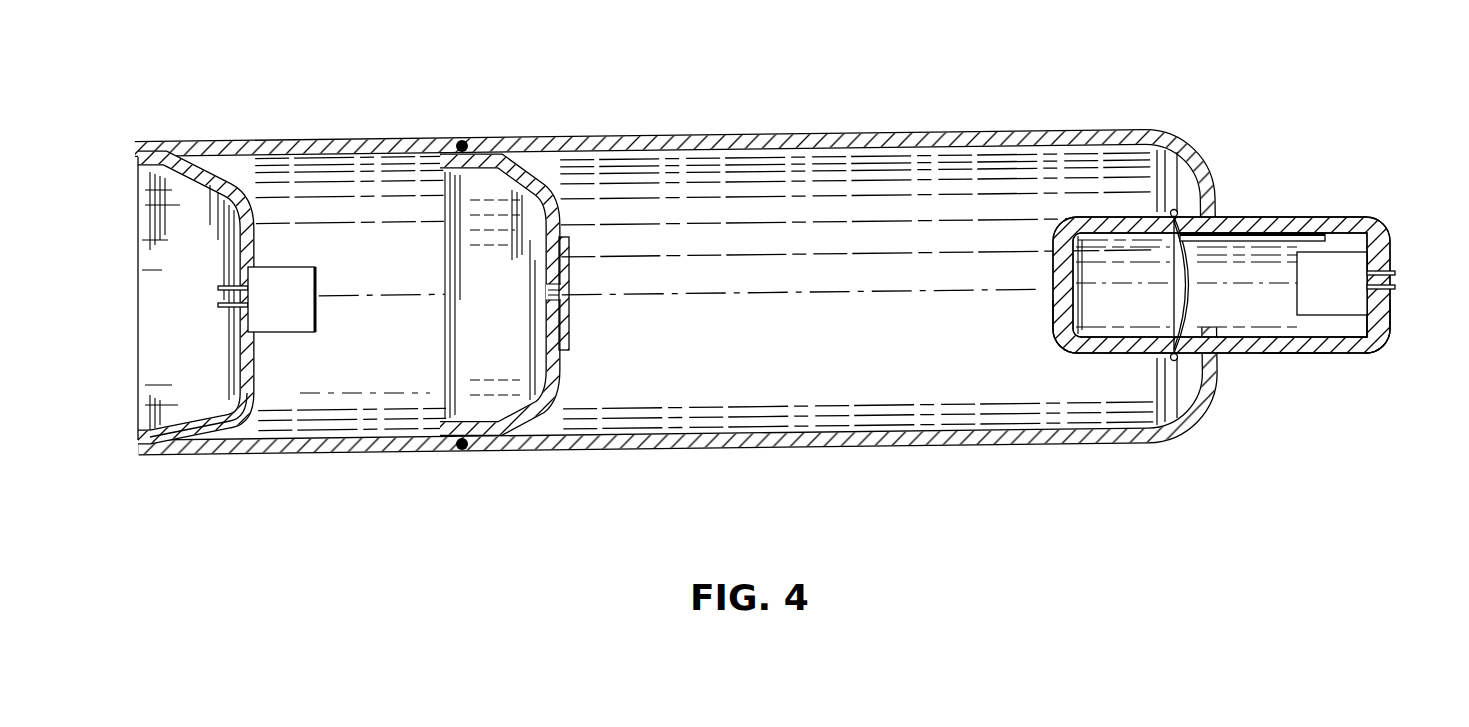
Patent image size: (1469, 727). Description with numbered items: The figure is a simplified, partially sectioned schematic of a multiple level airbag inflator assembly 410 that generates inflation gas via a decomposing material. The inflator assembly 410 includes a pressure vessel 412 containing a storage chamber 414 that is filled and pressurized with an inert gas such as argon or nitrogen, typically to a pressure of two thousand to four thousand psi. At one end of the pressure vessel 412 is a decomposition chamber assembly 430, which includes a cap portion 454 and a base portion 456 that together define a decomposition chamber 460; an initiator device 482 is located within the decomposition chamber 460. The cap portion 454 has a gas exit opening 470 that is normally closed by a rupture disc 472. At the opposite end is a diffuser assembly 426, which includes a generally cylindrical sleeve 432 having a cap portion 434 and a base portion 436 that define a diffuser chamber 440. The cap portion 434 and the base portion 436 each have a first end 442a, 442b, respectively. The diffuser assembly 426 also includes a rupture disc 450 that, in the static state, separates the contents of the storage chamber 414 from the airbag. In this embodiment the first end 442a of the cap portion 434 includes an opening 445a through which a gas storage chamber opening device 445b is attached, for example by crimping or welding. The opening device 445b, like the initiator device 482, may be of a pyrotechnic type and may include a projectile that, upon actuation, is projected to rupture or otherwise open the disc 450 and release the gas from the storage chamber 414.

The multiple level airbag inflator assembly 410 is at (672, 236).
The pressure vessel 412 is at (917, 128).
The storage chamber 414 is at (625, 167).
The diffuser assembly 426 is at (1318, 207).
The decomposition chamber assembly 430 is at (336, 136).
The cylindrical sleeve 432 is at (1288, 345).
The cap portion 434 is at (1352, 328).
The base portion 436 is at (1052, 268).
The diffuser chamber 440 is at (1262, 243).
The first end of cap portion 442a is at (1377, 327).
The first end of base portion 442b is at (1055, 325).
The opening 445a is at (1373, 260).
The gas storage chamber opening device 445b is at (1358, 300).
The rupture disc 450 is at (1213, 302).
The cap portion 454 is at (413, 445).
The base portion 456 is at (247, 423).
The decomposition chamber 460 is at (343, 400).
The gas exit opening 470 is at (548, 293).
The rupture disc 472 is at (568, 300).
The initiator device 482 is at (312, 290).